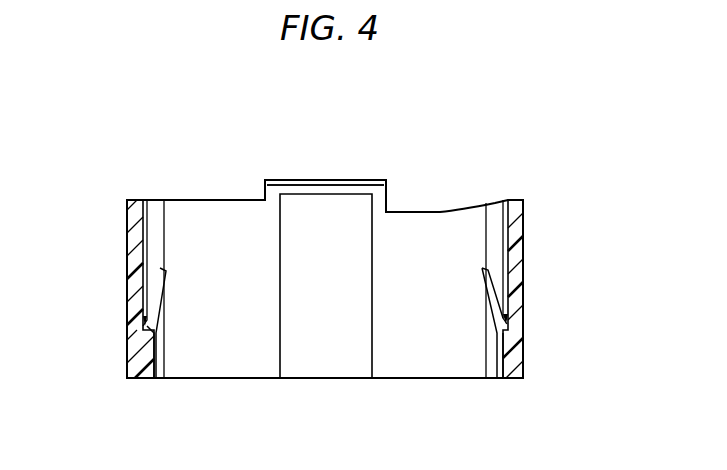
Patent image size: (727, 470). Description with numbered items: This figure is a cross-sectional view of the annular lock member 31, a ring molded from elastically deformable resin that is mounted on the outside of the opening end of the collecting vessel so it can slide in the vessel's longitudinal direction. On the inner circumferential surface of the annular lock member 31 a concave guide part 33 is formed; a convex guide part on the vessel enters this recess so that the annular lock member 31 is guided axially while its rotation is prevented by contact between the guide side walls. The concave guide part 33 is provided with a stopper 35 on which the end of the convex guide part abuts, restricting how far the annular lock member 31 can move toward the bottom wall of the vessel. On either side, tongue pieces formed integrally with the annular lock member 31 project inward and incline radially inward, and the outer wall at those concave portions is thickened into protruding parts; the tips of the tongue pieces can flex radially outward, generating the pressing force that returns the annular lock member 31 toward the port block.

The annular lock member 31 is at (543, 239).
The concave guide part 33 is at (327, 340).
The stopper 35 is at (327, 192).